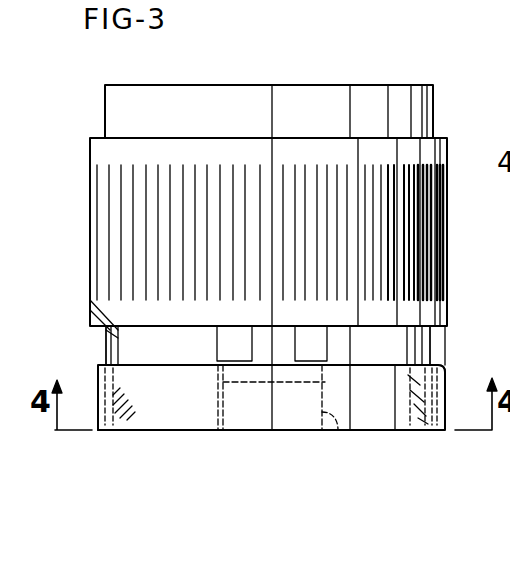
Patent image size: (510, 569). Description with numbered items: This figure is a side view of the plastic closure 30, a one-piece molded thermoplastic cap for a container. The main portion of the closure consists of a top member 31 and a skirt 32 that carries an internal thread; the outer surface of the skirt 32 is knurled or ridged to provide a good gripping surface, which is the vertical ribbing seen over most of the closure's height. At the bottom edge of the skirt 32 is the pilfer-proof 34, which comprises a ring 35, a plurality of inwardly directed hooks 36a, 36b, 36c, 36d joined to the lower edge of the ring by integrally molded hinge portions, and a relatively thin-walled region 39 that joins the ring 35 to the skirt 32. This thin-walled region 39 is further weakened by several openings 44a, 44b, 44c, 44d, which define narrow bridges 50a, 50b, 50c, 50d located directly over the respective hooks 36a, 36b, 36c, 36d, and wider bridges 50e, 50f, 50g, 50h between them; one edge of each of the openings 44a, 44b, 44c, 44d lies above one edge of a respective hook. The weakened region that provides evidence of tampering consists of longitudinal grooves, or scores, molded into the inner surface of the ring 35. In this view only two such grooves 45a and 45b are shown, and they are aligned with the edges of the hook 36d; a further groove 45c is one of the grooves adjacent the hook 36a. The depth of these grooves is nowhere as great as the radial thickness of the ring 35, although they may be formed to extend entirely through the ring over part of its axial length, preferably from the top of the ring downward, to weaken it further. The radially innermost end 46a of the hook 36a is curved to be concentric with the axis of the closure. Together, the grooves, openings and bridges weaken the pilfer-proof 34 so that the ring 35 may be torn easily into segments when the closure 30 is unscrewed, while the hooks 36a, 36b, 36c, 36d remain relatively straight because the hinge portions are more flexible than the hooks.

The plastic closure 30 is at (97, 97).
The top member 31 is at (204, 83).
The skirt 32 is at (92, 152).
The pilfer-proof 34 is at (90, 375).
The ring 35 is at (146, 418).
The hook 36a is at (125, 432).
The hook 36b is at (418, 432).
The hook 36c is at (362, 342).
The hook 36d is at (284, 416).
The region joining ring to skirt 39 is at (93, 334).
The opening 44a is at (105, 345).
The opening 44b is at (430, 325).
The opening 44c is at (217, 342).
The opening 44d is at (317, 348).
The groove 45a is at (212, 430).
The groove 45b is at (338, 433).
The groove 45c is at (509, 318).
The radially innermost end of hook 46a is at (509, 246).
The narrow bridge 50a is at (130, 338).
The narrow bridge 50b is at (440, 350).
The narrow bridge 50c is at (231, 378).
The narrow bridge 50d is at (258, 352).
The wider bridge 50e is at (66, 276).
The wider bridge 50f is at (421, 436).
The wider bridge 50g is at (378, 365).
The wider bridge 50h is at (120, 330).